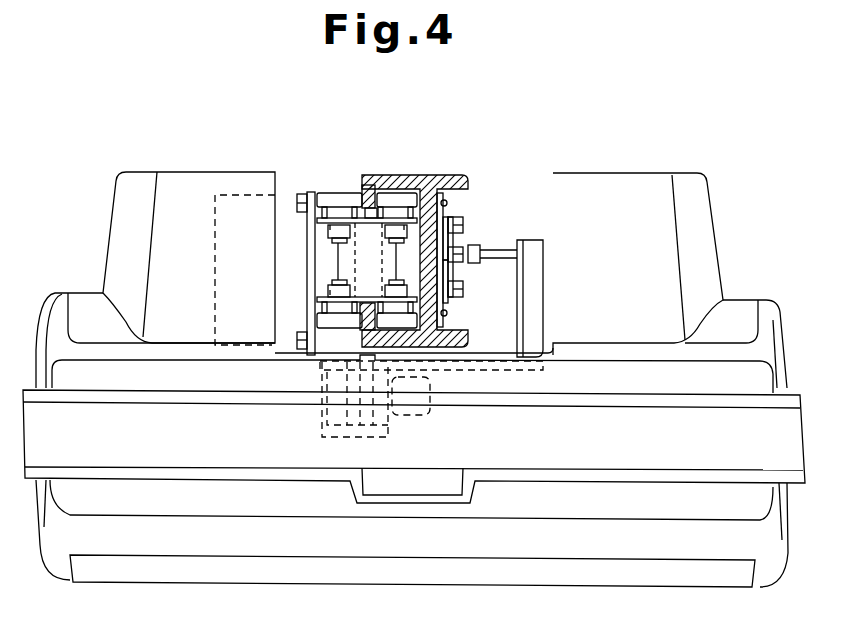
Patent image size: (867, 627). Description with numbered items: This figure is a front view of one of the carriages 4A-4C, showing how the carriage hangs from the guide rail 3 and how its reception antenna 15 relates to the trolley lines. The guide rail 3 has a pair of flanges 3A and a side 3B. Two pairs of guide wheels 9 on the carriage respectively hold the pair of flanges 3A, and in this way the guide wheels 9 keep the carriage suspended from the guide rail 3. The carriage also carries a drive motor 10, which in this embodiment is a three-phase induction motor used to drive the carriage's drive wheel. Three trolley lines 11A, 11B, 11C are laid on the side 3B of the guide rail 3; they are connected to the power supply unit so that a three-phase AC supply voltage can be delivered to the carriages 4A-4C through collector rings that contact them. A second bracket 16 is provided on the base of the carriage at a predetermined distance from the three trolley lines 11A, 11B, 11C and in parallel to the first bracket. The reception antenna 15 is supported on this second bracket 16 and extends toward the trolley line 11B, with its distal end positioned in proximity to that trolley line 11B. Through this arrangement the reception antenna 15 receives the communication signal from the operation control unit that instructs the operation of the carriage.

The guide rail 3 is at (432, 175).
The flanges 3A is at (368, 184).
The side 3B is at (452, 268).
The guide wheels 9 is at (335, 193).
The drive motor 10 is at (288, 192).
The trolley line 11A is at (450, 195).
The trolley line 11B is at (455, 232).
The trolley line 11C is at (450, 290).
The reception antenna 15 is at (482, 248).
The second bracket 16 is at (541, 283).
The carriages 4A-4C is at (720, 221).